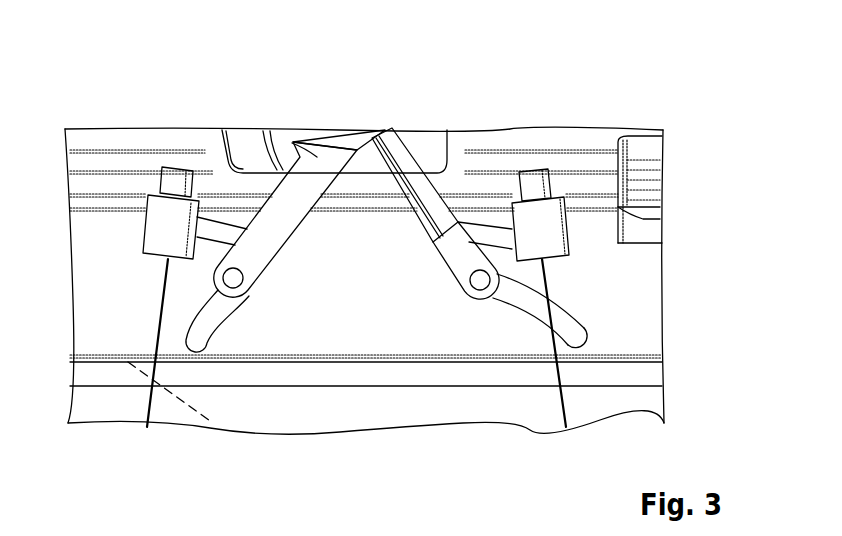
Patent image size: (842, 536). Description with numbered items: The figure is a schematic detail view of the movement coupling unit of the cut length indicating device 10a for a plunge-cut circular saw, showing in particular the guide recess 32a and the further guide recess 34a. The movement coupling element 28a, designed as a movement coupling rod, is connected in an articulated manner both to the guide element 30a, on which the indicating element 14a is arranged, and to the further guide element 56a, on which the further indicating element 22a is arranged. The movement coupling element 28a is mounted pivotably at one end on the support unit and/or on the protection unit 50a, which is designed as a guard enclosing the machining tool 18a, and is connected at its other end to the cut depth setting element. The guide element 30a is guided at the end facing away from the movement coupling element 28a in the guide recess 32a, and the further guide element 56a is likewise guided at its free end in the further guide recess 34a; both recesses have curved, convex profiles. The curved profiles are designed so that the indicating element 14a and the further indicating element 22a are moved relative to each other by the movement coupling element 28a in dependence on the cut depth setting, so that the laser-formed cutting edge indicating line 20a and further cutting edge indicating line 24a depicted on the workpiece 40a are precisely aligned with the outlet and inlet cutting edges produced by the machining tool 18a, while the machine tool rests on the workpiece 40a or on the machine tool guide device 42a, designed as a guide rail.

The cut length indicating device 10a is at (104, 88).
The indicating element 14a is at (547, 213).
The machining tool 18a is at (585, 353).
The cutting edge indicating line 20a is at (561, 403).
The further indicating element 22a is at (175, 182).
The further cutting edge indicating line 24a is at (151, 405).
The movement coupling element 28a is at (342, 138).
The guide element 30a is at (400, 157).
The guide recess 32a is at (584, 342).
The further guide recess 34a is at (201, 338).
The workpiece 40a is at (647, 414).
The machine tool guide device 42a is at (650, 379).
The protection unit 50a is at (653, 178).
The further guide element 56a is at (285, 137).